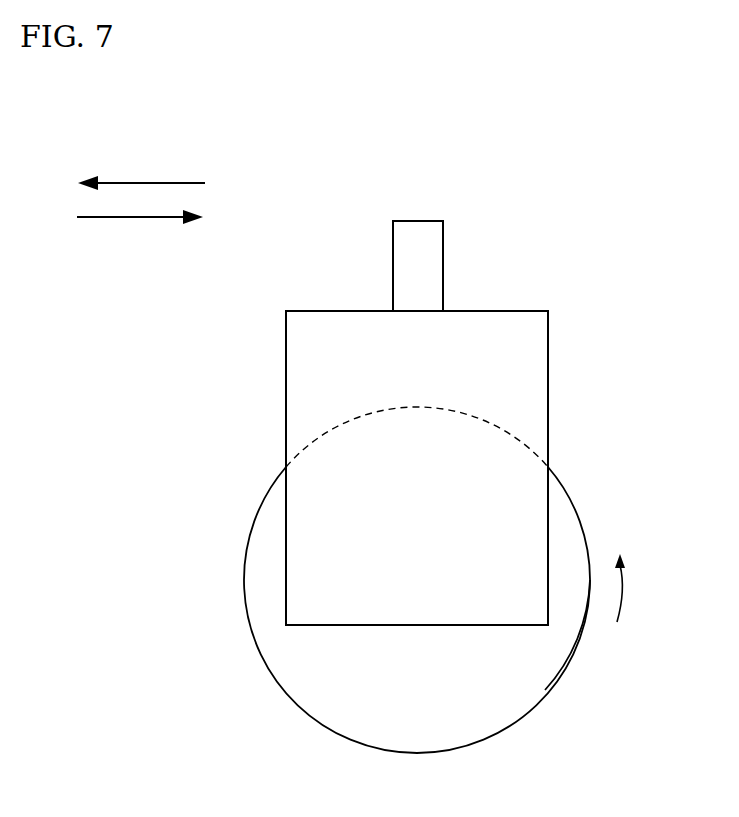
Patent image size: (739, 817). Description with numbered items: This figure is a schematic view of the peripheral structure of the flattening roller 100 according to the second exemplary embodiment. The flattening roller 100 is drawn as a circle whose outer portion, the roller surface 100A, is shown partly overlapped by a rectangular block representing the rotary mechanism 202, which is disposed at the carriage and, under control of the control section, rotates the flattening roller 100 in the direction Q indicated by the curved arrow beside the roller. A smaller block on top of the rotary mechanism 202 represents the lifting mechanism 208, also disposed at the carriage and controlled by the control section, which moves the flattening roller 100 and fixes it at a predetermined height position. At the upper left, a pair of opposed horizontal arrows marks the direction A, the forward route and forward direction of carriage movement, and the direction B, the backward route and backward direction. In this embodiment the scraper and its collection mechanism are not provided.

The flattening roller 100 is at (513, 712).
The surface of photosensitive drum 100A is at (563, 678).
The rotary mechanism 202 is at (548, 367).
The lifting mechanism 208 is at (443, 258).
The direction A is at (143, 182).
The direction B is at (135, 218).
The direction Q is at (622, 590).